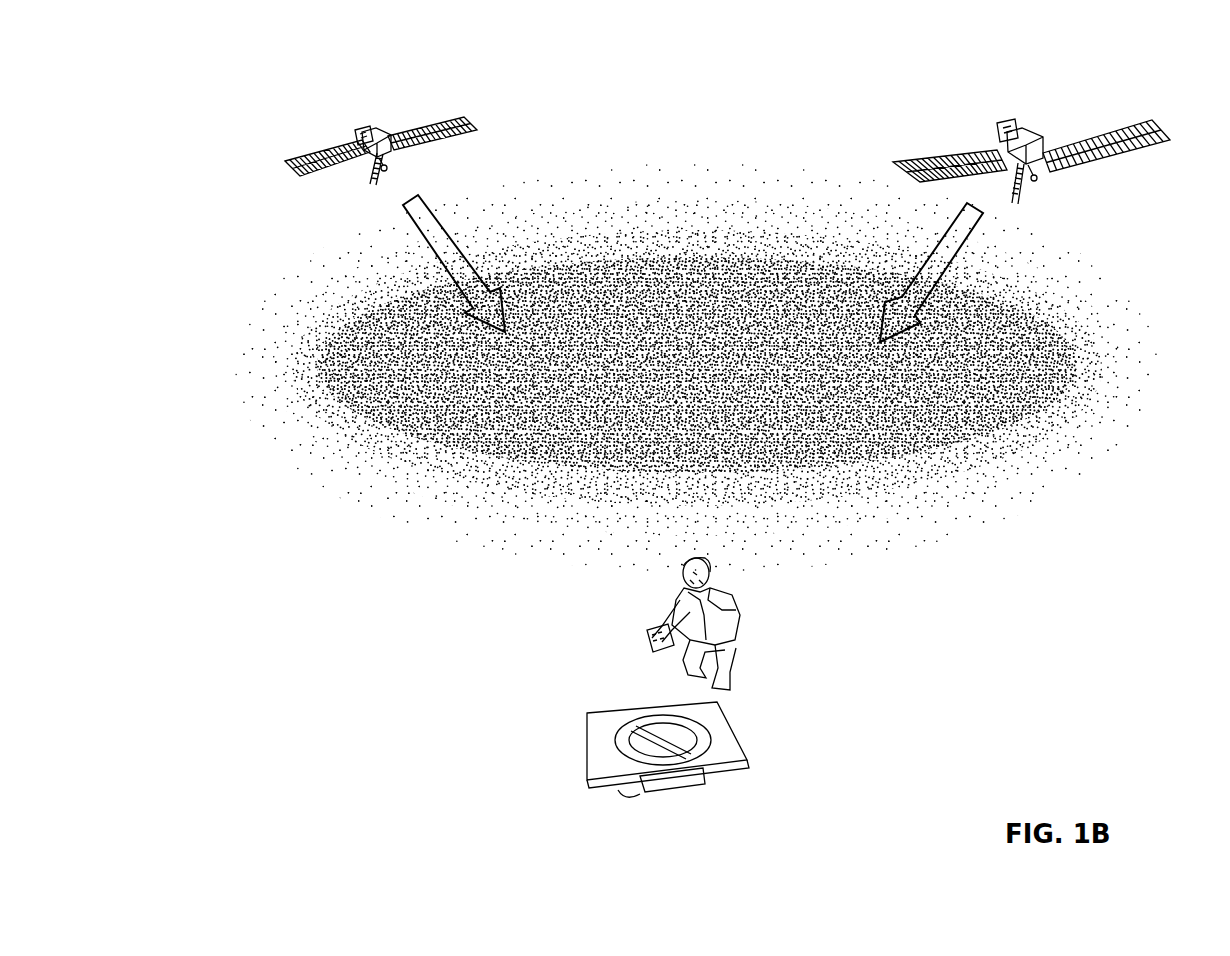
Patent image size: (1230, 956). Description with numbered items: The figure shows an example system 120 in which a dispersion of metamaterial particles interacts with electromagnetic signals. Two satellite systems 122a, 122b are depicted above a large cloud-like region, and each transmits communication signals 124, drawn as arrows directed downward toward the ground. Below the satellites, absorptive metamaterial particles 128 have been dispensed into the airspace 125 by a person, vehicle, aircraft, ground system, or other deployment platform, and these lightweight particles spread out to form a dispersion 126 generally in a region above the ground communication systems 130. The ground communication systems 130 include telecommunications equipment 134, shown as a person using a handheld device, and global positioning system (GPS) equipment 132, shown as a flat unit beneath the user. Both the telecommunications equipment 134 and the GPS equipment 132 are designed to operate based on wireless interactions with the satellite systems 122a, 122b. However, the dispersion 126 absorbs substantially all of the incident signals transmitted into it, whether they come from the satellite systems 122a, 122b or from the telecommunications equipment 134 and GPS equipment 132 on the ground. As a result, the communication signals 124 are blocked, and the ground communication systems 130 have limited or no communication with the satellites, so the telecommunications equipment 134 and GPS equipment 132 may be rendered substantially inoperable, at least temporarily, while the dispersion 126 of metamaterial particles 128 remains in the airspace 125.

The example system 120 is at (208, 88).
The satellite system 122a is at (362, 130).
The satellite system 122b is at (997, 128).
The communication signals 124 is at (428, 193).
The airspace 125 is at (1122, 222).
The dispersion 126 is at (200, 290).
The metamaterial particles 128 is at (310, 227).
The ground communication systems 130 is at (565, 682).
The global positioning system (GPS) equipment 132 is at (587, 766).
The telecommunications equipment 134 is at (742, 648).